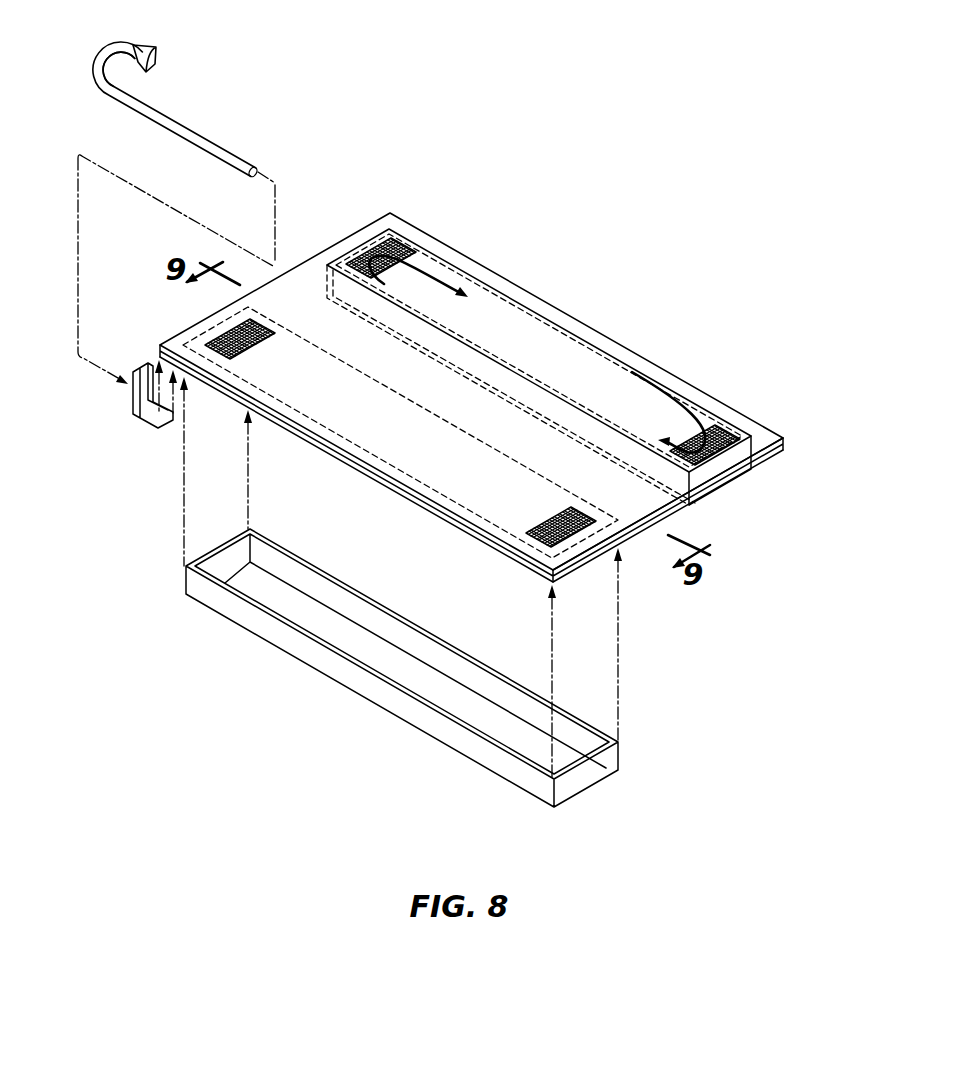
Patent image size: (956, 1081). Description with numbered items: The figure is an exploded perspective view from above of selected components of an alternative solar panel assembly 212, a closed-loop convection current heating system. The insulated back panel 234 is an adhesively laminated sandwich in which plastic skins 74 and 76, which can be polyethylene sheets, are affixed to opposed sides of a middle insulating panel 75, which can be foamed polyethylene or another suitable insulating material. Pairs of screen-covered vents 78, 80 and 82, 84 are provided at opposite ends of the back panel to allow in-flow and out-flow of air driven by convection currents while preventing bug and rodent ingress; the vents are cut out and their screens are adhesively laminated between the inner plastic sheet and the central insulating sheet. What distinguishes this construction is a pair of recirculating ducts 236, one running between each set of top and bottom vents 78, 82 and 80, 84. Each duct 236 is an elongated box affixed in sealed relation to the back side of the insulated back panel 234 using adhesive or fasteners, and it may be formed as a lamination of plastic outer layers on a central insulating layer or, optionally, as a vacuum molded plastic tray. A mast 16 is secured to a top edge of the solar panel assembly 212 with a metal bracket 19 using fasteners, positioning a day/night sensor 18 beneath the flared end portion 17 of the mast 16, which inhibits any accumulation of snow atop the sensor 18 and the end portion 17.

The mast 16 is at (98, 58).
The flared end portion 17 is at (145, 46).
The day/night sensor 18 is at (158, 60).
The metal bracket 19 is at (146, 418).
The plastic sheet 74 is at (455, 397).
The insulating sheet 75 is at (322, 452).
The plastic sheet 76 is at (403, 498).
The screen-covered vent 78 is at (268, 342).
The screen-covered vent 80 is at (373, 262).
The screen-covered vent 82 is at (580, 512).
The screen-covered vent 84 is at (690, 445).
The solar panel assembly 212 is at (496, 510).
The insulated back panel 234 is at (670, 519).
The recirculating duct 236 is at (730, 487).